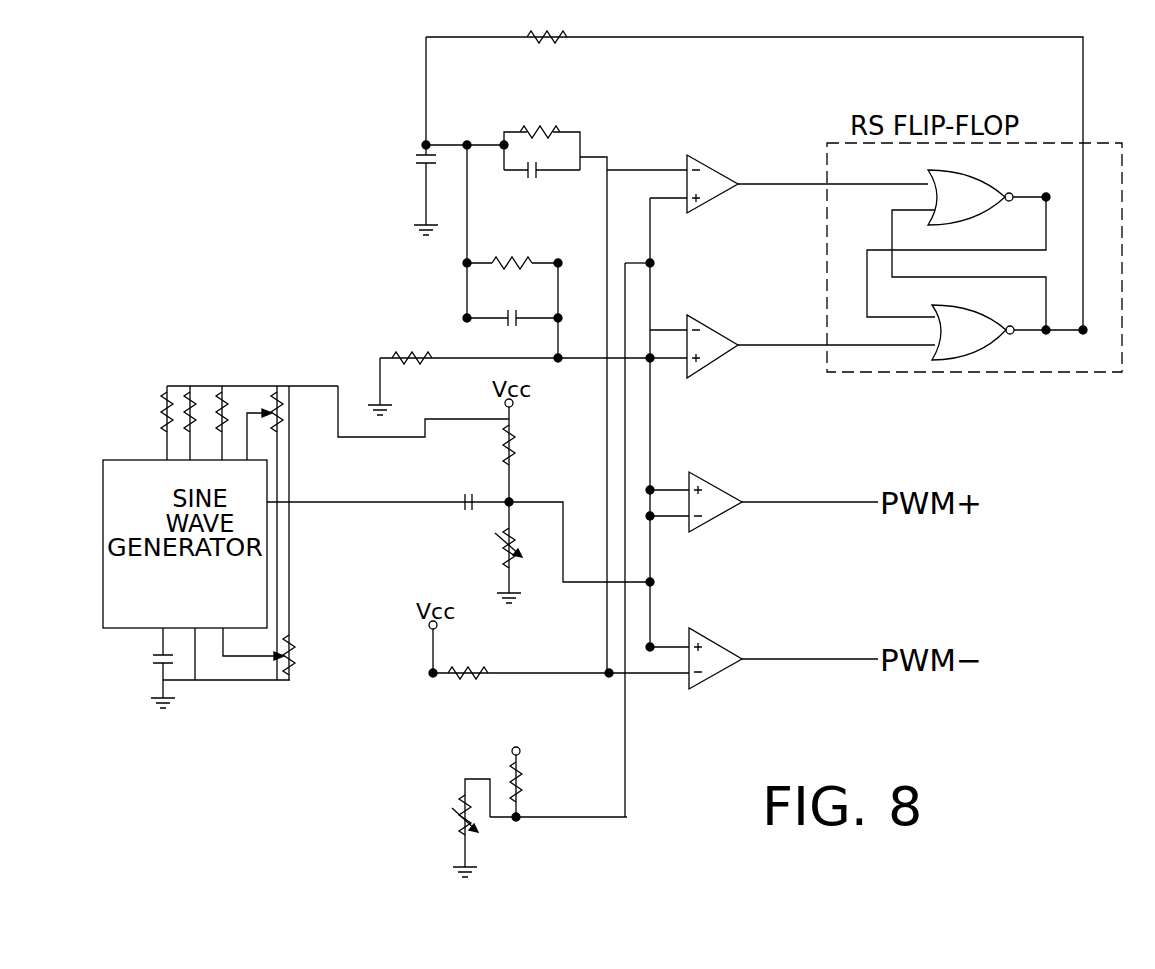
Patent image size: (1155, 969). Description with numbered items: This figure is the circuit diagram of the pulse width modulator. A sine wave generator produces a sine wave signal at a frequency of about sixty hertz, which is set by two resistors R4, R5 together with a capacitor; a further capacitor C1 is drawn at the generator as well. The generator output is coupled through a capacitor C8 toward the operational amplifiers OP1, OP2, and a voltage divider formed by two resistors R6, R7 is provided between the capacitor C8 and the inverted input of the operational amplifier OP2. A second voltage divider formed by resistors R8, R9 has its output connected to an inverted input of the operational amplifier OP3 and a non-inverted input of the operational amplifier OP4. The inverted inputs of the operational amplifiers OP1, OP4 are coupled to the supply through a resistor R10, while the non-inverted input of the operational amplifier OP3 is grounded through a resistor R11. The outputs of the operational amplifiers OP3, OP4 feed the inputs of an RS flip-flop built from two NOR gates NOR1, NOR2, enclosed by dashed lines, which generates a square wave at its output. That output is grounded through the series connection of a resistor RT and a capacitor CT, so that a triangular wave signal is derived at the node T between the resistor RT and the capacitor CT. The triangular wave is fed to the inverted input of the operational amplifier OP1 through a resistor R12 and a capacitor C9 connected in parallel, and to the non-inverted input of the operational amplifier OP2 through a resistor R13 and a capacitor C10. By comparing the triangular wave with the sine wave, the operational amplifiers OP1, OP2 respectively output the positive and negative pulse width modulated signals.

The resistor RT is at (547, 51).
The capacitor CT is at (410, 189).
The node T is at (438, 131).
The resistor R12 is at (542, 136).
The capacitor C9 is at (542, 185).
The resistor R13 is at (512, 251).
The capacitor C10 is at (512, 302).
The resistor R11 is at (418, 346).
The resistor R4 is at (259, 533).
The resistor R5 is at (275, 533).
The resistor R6 is at (526, 454).
The resistor R7 is at (524, 552).
The capacitor C8 is at (468, 487).
The capacitor C1 is at (150, 668).
The resistor R10 is at (521, 686).
The resistor R8 is at (532, 782).
The resistor R9 is at (450, 818).
The operational amplifier OP1 is at (727, 651).
The operational amplifier OP2 is at (727, 495).
The operational amplifier OP3 is at (725, 343).
The operational amplifier OP4 is at (728, 180).
The NOR gate NOR1 is at (958, 235).
The NOR gate NOR2 is at (1009, 318).